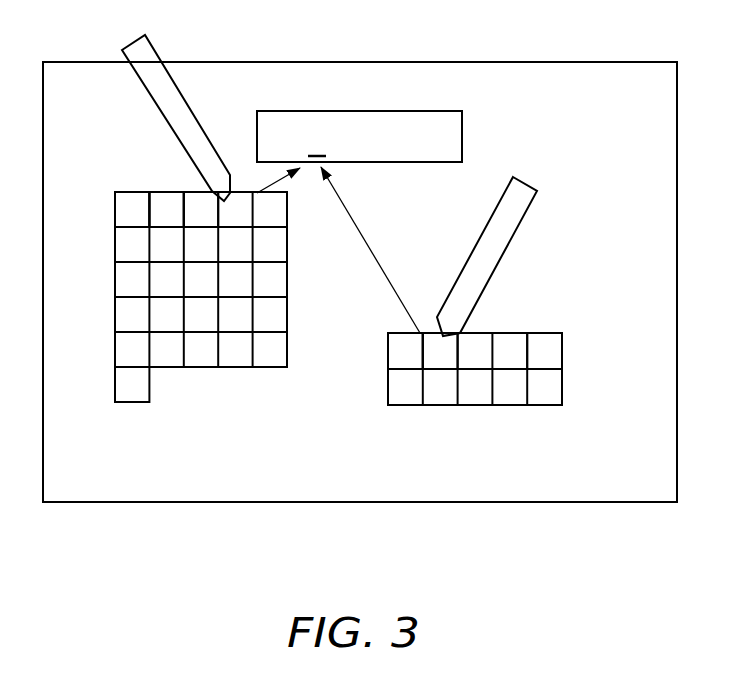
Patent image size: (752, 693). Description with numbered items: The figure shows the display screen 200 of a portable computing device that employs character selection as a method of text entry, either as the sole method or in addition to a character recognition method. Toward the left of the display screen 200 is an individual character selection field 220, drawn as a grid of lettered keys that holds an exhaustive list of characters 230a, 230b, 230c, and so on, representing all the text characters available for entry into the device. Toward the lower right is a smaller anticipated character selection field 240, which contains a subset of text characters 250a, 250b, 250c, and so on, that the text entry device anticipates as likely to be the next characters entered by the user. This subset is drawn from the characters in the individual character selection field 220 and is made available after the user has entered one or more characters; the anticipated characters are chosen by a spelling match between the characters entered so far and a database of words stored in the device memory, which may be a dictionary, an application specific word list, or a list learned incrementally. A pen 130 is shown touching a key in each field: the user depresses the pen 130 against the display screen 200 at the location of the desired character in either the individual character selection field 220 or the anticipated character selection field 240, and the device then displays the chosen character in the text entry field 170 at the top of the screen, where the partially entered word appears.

The display screen 200 is at (210, 62).
The pen 130 is at (150, 83).
The text entry field 170 is at (450, 143).
The individual character selection field 220 is at (198, 367).
The character 230a is at (125, 203).
The character 230b is at (157, 197).
The character 230c is at (200, 197).
The anticipated character selection field 240 is at (388, 370).
The anticipated character 250a is at (398, 333).
The anticipated character 250b is at (431, 333).
The anticipated character 250c is at (517, 333).